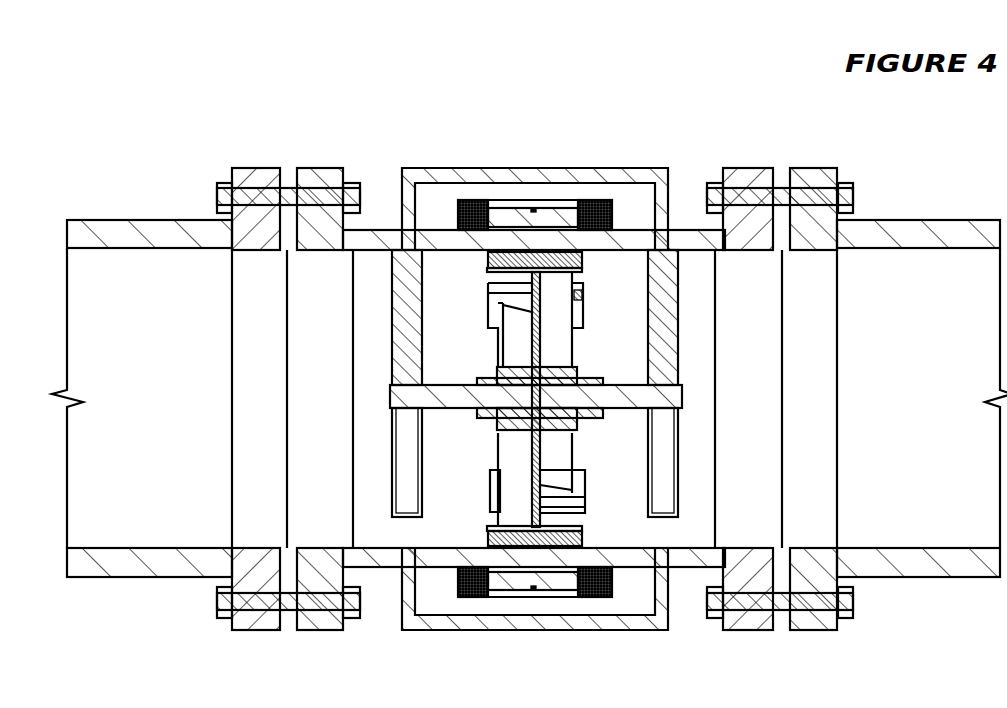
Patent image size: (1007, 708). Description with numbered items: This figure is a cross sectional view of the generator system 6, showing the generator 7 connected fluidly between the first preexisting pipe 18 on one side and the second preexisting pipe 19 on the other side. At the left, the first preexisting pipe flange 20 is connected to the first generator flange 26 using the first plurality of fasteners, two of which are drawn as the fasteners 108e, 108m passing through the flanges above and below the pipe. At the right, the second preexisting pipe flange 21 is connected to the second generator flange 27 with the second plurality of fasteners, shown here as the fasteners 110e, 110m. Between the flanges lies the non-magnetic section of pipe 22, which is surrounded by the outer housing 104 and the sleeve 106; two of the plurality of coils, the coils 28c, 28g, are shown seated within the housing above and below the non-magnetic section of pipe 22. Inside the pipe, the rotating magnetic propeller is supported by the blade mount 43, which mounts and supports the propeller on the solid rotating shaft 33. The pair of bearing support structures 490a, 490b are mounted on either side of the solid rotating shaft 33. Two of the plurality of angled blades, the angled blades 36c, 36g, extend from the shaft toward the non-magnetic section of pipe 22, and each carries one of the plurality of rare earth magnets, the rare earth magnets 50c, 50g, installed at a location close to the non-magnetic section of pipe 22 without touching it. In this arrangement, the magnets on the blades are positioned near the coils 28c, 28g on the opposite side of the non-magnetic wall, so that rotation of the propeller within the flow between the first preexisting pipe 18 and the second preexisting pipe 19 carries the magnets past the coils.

The generator system 6 is at (68, 133).
The generator 7 is at (622, 95).
The first preexisting pipe 18 is at (165, 220).
The second preexisting pipe 19 is at (914, 220).
The first preexisting pipe flange 20 is at (252, 168).
The second preexisting pipe flange 21 is at (825, 168).
The non-magnetic section of pipe 22 is at (618, 238).
The first generator flange 26 is at (330, 168).
The second generator flange 27 is at (750, 168).
The coil 28c is at (458, 217).
The coil 28g is at (458, 582).
The solid rotating shaft 33 is at (462, 385).
The angled blade 36c is at (573, 337).
The angled blade 36g is at (510, 462).
The blade mount 43 is at (522, 362).
The rare earth magnet 50c is at (521, 250).
The rare earth magnet 50g is at (520, 548).
The outer housing 104 is at (607, 168).
The sleeve 106 is at (553, 210).
The fastener 108e is at (217, 198).
The fastener 108m is at (217, 603).
The fastener 110e is at (853, 198).
The fastener 110m is at (853, 603).
The bearing support structure 490a is at (423, 278).
The bearing support structure 490b is at (650, 278).